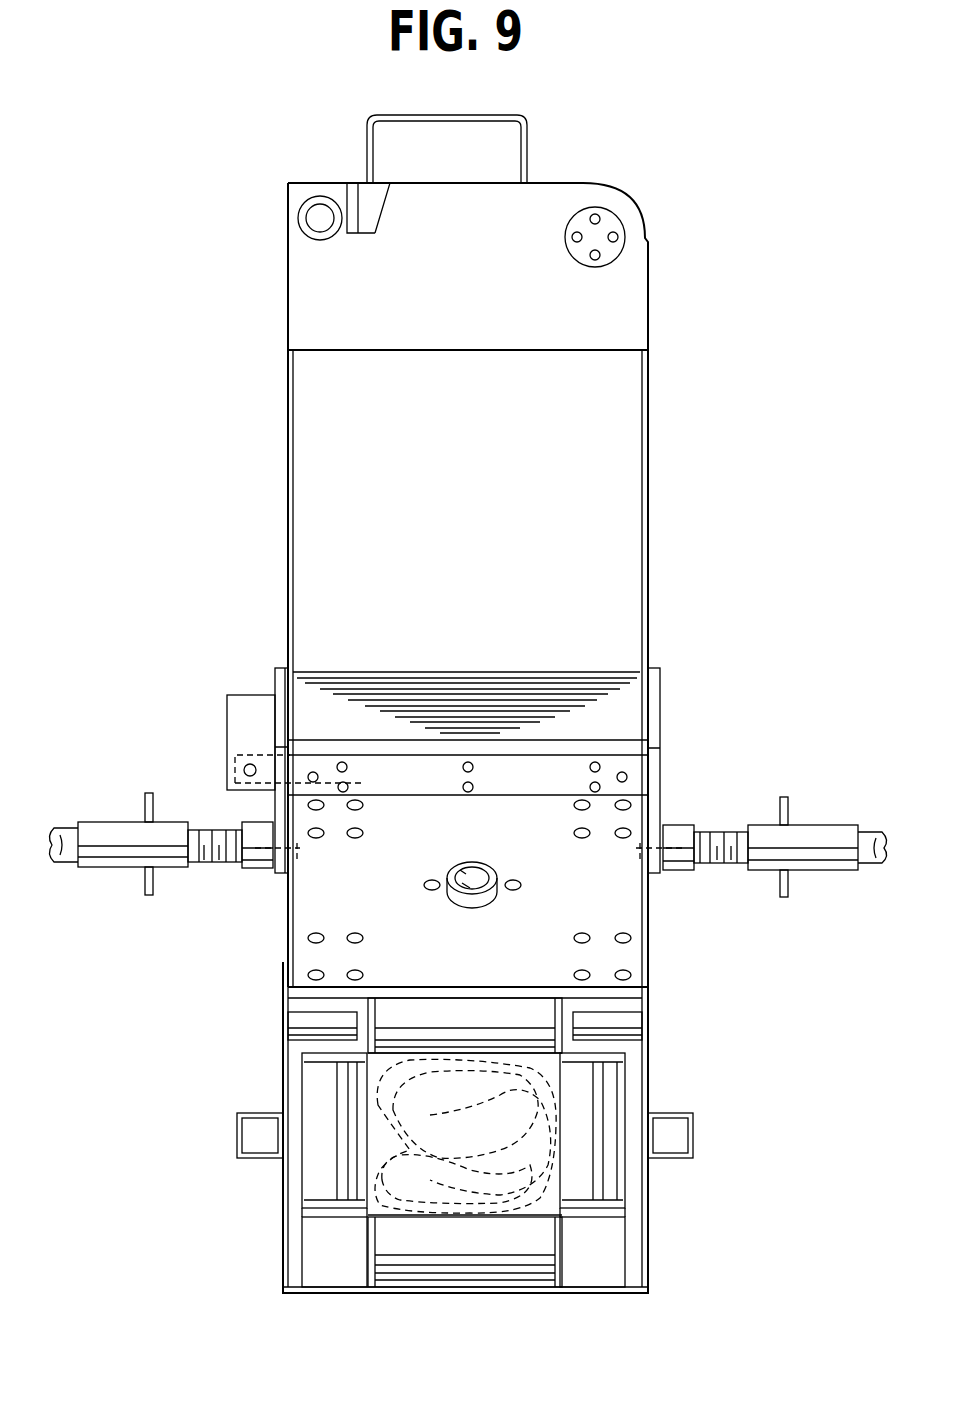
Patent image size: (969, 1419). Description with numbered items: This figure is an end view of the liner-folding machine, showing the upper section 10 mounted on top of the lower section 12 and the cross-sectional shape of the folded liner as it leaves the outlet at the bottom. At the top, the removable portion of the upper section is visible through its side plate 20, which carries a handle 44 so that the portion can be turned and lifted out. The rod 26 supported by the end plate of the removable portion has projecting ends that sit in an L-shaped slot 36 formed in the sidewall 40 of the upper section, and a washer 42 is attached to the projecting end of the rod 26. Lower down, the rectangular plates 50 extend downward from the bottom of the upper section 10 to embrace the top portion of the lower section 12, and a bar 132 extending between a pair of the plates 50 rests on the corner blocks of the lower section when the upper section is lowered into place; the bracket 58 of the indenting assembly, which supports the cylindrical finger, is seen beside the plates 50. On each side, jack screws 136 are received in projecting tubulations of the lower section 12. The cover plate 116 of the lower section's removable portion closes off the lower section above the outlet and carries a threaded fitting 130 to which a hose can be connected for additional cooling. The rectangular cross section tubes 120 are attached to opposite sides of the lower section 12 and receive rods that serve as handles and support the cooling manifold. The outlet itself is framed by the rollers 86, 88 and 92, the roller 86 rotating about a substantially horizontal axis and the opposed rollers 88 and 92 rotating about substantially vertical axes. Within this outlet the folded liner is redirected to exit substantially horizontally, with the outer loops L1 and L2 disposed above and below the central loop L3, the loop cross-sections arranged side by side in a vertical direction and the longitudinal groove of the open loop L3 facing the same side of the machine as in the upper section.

The upper section 10 is at (672, 545).
The lower section 12 is at (688, 1035).
The side plate 20 is at (372, 200).
The rod 26 is at (313, 222).
The L-shaped slot 36 is at (350, 226).
The sidewall 40 is at (640, 330).
The washer 42 is at (318, 242).
The handle 44 is at (527, 143).
The rectangular plate 50 is at (278, 795).
The bracket 58 is at (243, 706).
The roller 86 is at (527, 1010).
The roller 88 is at (622, 1079).
The roller 92 is at (315, 1077).
The cover plate 116 is at (472, 956).
The rectangular cross section tube 120 is at (236, 1138).
The fitting 130 is at (470, 861).
The bar 132 is at (392, 772).
The jack screw 136 is at (218, 864).
The outer loop L1 is at (457, 1179).
The outer loop L2 is at (465, 1136).
The central loop L3 is at (490, 1142).